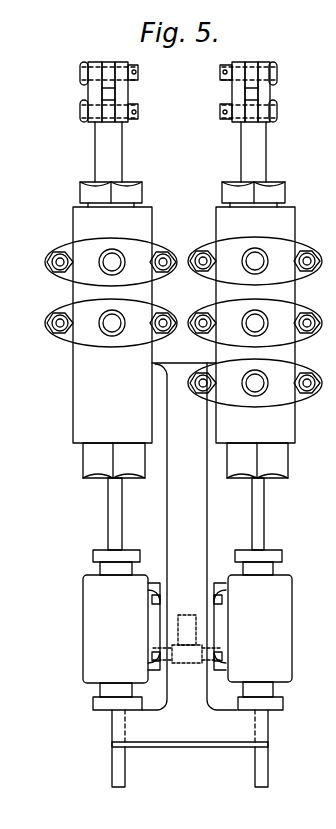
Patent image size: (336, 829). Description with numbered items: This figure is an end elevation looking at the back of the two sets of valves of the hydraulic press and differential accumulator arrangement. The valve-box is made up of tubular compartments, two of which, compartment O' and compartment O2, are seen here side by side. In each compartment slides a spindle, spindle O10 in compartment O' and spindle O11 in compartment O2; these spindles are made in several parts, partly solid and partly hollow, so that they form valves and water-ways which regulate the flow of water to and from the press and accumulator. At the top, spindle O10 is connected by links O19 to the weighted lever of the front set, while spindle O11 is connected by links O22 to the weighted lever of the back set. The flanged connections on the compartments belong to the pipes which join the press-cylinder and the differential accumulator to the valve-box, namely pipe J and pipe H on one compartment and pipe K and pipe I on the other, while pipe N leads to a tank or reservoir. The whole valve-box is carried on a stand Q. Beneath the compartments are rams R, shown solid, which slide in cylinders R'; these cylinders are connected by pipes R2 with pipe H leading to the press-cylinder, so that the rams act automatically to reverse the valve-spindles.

The compartment O' is at (112, 330).
The compartment O2 is at (255, 330).
The spindle O10 is at (122, 160).
The spindle O11 is at (263, 160).
The links O19 is at (128, 93).
The links O22 is at (270, 93).
The pipe J is at (118, 251).
The pipe H is at (112, 335).
The pipe K is at (258, 250).
The pipe N is at (262, 323).
The pipe I is at (264, 383).
The stand Q is at (189, 536).
The rams R is at (183, 632).
The cylinders R' is at (187, 629).
The pipes R2 is at (152, 648).